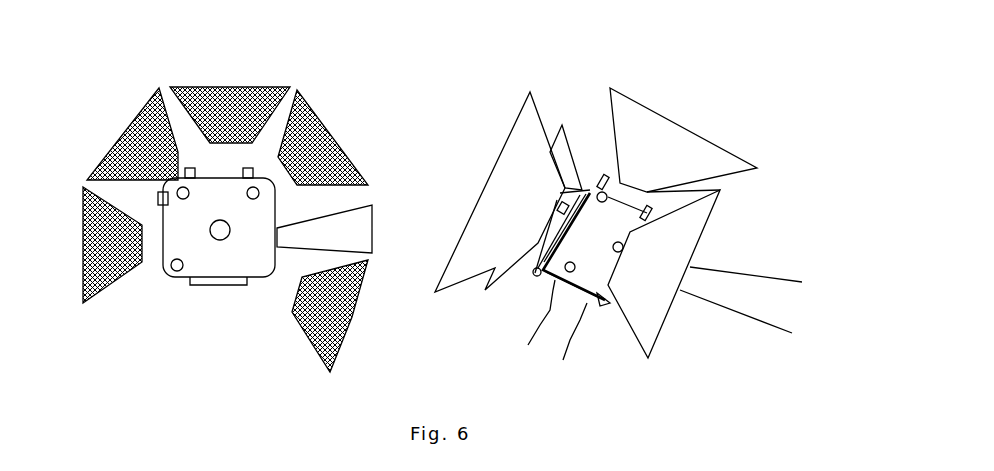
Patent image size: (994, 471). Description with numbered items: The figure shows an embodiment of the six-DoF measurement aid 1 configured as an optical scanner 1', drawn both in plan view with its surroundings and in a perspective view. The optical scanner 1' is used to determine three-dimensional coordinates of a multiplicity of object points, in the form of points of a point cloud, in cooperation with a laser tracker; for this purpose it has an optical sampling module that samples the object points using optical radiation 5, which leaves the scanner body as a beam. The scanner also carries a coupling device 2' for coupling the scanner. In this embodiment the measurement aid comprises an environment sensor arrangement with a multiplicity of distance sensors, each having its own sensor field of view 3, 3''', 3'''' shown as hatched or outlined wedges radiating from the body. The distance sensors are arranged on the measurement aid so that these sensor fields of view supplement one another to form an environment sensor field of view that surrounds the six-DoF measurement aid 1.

The six-DoF measurement aid 1 is at (590, 267).
The optical scanner 1' is at (216, 222).
The coupling device 2' is at (210, 309).
The sensor field of view 3 is at (315, 228).
The sensor field of view 3''' is at (540, 221).
The sensor field of view 3'''' is at (355, 316).
The optical radiation 5 is at (372, 232).